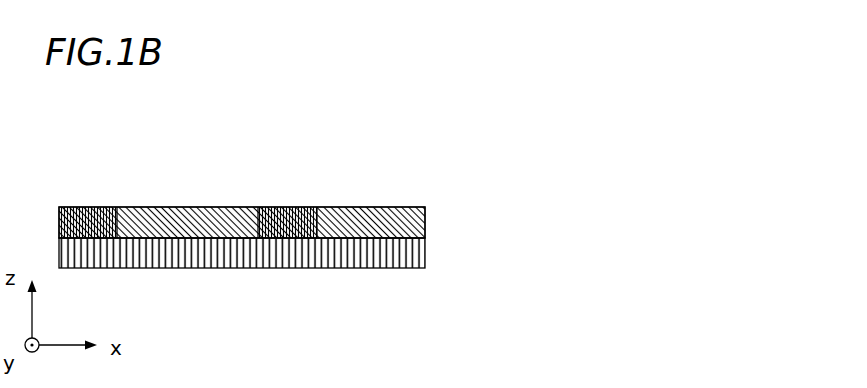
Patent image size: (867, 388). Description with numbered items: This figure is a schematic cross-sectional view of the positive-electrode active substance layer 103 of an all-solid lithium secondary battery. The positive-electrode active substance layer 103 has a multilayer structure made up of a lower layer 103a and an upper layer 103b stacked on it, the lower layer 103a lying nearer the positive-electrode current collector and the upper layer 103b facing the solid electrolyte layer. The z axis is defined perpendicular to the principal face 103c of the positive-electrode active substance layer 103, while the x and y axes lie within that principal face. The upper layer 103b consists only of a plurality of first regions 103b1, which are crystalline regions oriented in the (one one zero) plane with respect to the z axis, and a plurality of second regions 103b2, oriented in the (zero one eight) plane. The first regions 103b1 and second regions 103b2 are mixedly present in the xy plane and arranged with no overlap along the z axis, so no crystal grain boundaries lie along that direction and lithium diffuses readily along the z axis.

The positive-electrode active substance layer 103 is at (427, 206).
The lower layer 103a is at (398, 245).
The upper layer 103b is at (375, 179).
The first regions 103b1 is at (287, 215).
The second regions 103b2 is at (398, 217).
The principal face 103c is at (96, 201).